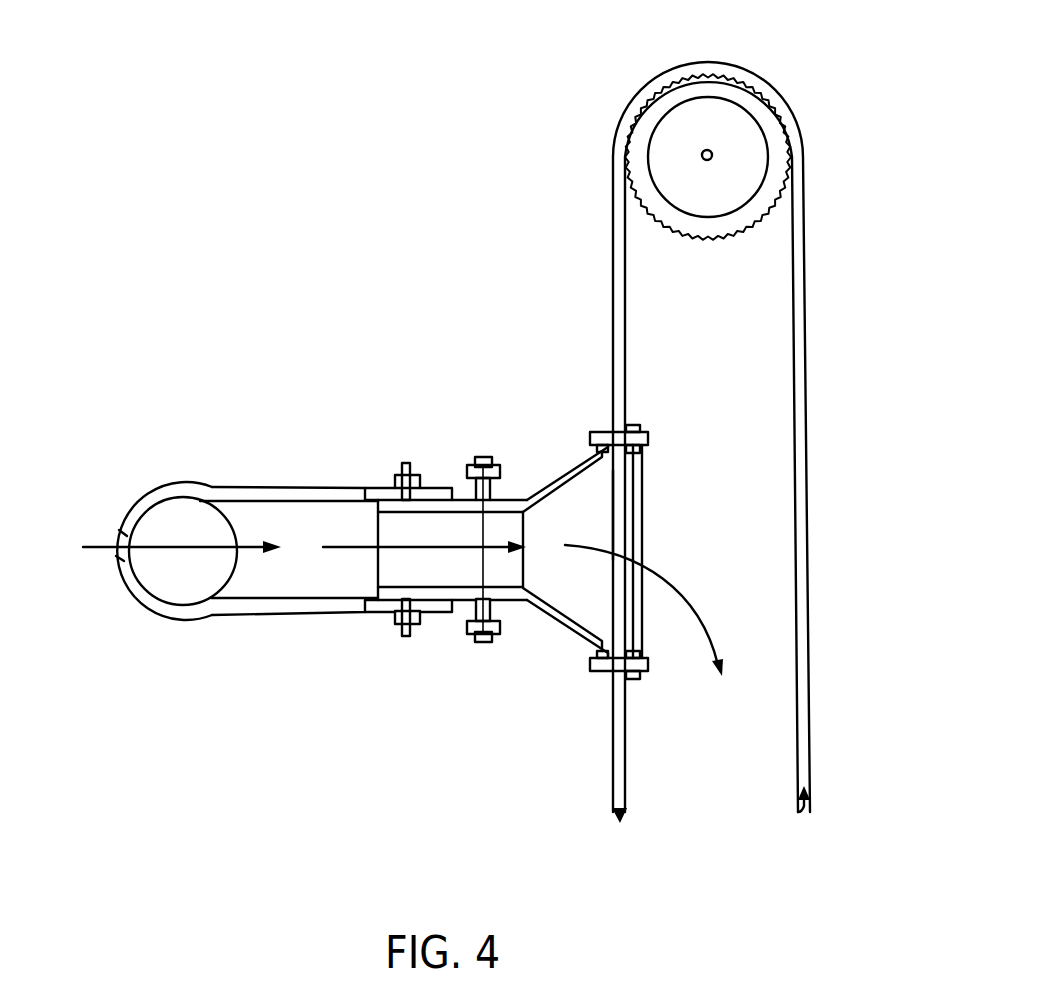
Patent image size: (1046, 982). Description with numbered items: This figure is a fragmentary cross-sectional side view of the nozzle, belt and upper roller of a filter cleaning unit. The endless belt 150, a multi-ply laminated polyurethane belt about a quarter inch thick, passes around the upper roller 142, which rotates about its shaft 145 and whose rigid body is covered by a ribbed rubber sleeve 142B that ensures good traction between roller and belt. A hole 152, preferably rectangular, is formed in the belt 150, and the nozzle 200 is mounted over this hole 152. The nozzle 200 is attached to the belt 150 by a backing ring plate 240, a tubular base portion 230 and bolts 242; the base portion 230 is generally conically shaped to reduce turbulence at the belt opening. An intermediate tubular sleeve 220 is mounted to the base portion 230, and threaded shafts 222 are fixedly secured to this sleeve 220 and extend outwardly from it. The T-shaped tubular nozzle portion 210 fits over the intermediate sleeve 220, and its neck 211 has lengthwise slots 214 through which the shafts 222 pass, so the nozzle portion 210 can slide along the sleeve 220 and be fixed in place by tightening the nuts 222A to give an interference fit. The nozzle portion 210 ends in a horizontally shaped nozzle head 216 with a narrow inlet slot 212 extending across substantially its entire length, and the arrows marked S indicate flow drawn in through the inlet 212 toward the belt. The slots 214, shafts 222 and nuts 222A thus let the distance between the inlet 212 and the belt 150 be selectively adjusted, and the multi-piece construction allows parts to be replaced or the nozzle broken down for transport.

The nozzle 200 is at (226, 350).
The nozzle portion 210 is at (267, 472).
The neck 211 is at (325, 487).
The inlet slot 212 is at (117, 550).
The lengthwise slots 214 is at (373, 487).
The nozzle head 216 is at (150, 488).
The intermediate tubular sleeve 220 is at (452, 600).
The threaded shafts 222 is at (421, 477).
The nuts 222A is at (394, 476).
The tubular base portion 230 is at (565, 623).
The backing ring plate 240 is at (633, 480).
The bolts 242 is at (650, 427).
The endless belt 150 is at (612, 268).
The hole 152 is at (624, 513).
The upper roller 142 is at (753, 168).
The ribbed rubber sleeve 142B is at (753, 98).
The shaft 145 is at (702, 155).
The fluid stream S is at (165, 547).